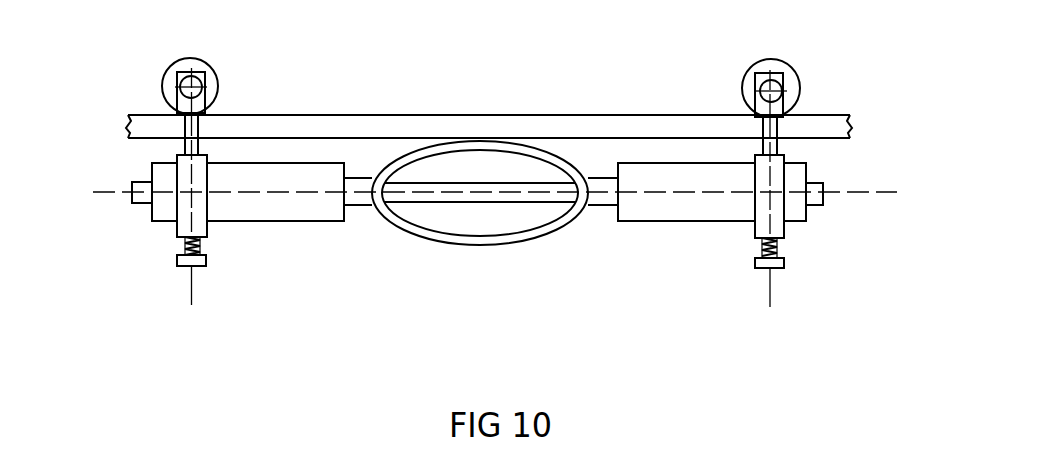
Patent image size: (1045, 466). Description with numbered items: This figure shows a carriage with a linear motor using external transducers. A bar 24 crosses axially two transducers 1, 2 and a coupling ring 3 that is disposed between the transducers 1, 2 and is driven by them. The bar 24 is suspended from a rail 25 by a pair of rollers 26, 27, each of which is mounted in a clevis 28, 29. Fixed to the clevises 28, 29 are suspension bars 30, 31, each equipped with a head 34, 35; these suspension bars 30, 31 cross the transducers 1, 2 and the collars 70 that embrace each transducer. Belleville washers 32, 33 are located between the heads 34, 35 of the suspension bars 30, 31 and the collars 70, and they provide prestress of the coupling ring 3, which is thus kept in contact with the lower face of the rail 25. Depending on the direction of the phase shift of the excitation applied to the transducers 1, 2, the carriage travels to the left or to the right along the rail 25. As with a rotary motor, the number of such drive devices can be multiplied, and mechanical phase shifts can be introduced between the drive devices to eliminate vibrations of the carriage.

The transducer 1 is at (220, 200).
The transducer 2 is at (653, 180).
The coupling ring 3 is at (523, 150).
The bar 24 is at (425, 193).
The rail 25 is at (150, 127).
The roller 26 is at (198, 66).
The roller 27 is at (779, 68).
The clevis 28 is at (198, 108).
The clevis 29 is at (743, 100).
The suspension bar 30 is at (183, 144).
The suspension bar 31 is at (778, 143).
The Belleville washer 32 is at (182, 246).
The Belleville washer 33 is at (757, 243).
The head 34 is at (205, 258).
The head 35 is at (782, 262).
The collar 70 is at (177, 174).